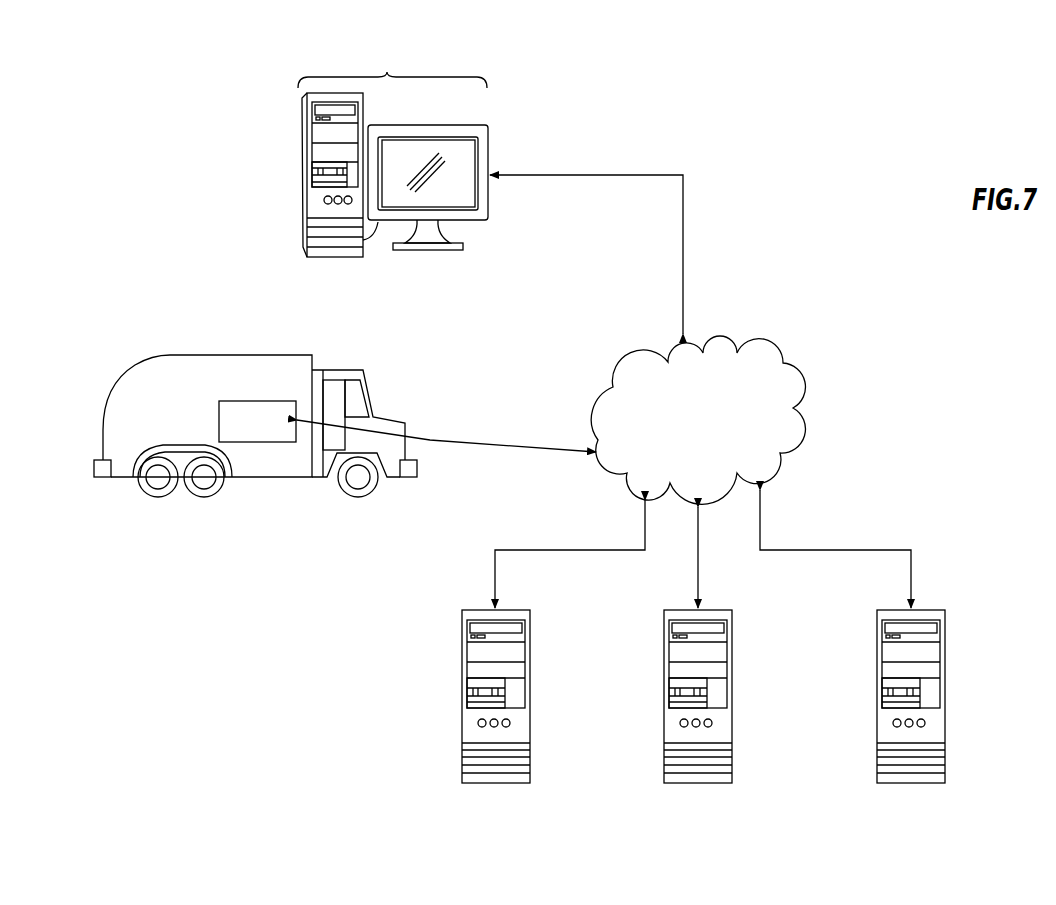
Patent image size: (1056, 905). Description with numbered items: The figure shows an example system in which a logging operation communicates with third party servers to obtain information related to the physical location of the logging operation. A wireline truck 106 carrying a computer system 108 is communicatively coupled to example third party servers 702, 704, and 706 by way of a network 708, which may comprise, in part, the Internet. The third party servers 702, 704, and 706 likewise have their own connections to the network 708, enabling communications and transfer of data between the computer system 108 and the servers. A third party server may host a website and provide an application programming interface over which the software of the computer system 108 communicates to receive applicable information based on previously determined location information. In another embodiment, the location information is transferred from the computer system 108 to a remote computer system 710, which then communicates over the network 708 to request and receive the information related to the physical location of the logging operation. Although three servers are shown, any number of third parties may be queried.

The wireline truck 106 is at (132, 370).
The computer system 108 is at (277, 432).
The third party server 702 is at (515, 783).
The third party server 704 is at (718, 783).
The third party server 706 is at (918, 783).
The network 708 is at (679, 450).
The remote computer system 710 is at (387, 72).